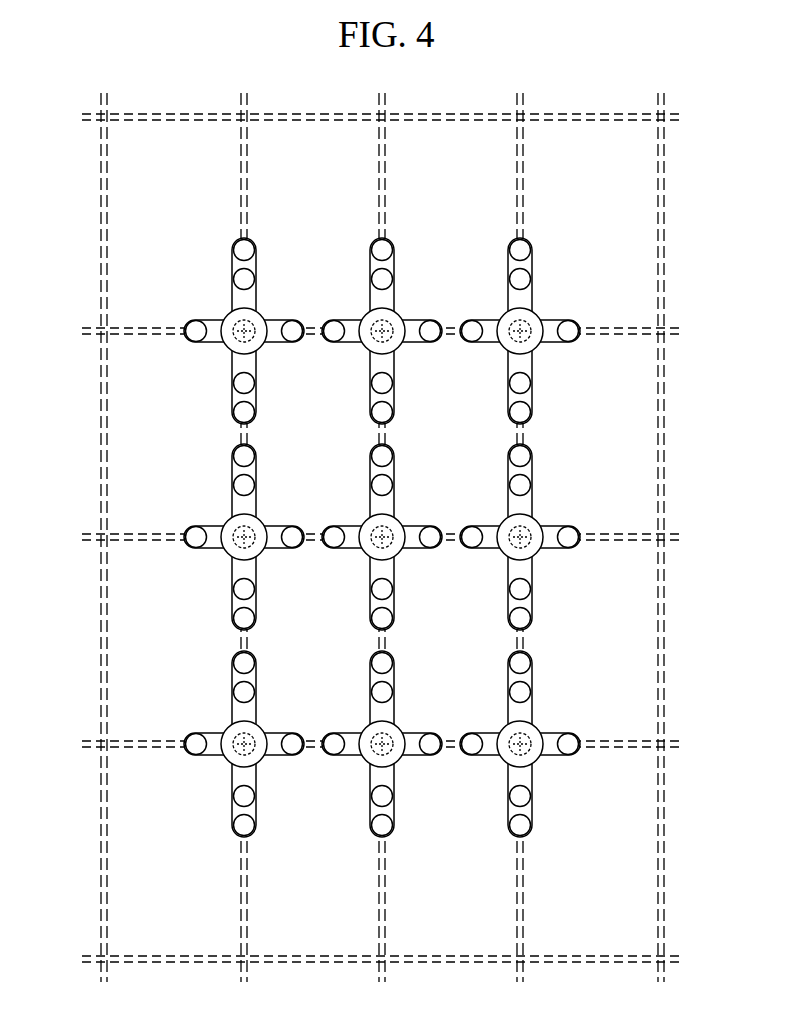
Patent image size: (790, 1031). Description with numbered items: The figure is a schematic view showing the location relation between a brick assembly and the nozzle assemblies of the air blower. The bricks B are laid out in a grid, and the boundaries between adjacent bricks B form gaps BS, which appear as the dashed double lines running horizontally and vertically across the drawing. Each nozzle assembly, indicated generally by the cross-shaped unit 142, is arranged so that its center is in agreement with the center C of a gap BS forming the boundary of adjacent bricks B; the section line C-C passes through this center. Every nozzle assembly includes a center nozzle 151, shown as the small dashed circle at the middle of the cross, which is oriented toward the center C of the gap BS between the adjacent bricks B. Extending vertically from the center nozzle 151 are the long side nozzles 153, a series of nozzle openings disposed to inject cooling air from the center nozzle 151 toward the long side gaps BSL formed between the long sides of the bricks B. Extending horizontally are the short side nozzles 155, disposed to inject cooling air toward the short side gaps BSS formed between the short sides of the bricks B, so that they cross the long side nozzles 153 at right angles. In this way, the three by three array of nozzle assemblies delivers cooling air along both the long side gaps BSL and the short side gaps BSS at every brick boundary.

The memory cell structure 142 is at (194, 270).
The center nozzle 151 is at (528, 322).
The long side nozzles 153 is at (524, 249).
The short side nozzles 155 is at (473, 327).
The bricks B is at (390, 537).
The center of the gap C is at (102, 326).
The gap BS is at (145, 536).
The short side gaps BSS is at (90, 743).
The long side gaps BSL is at (103, 868).